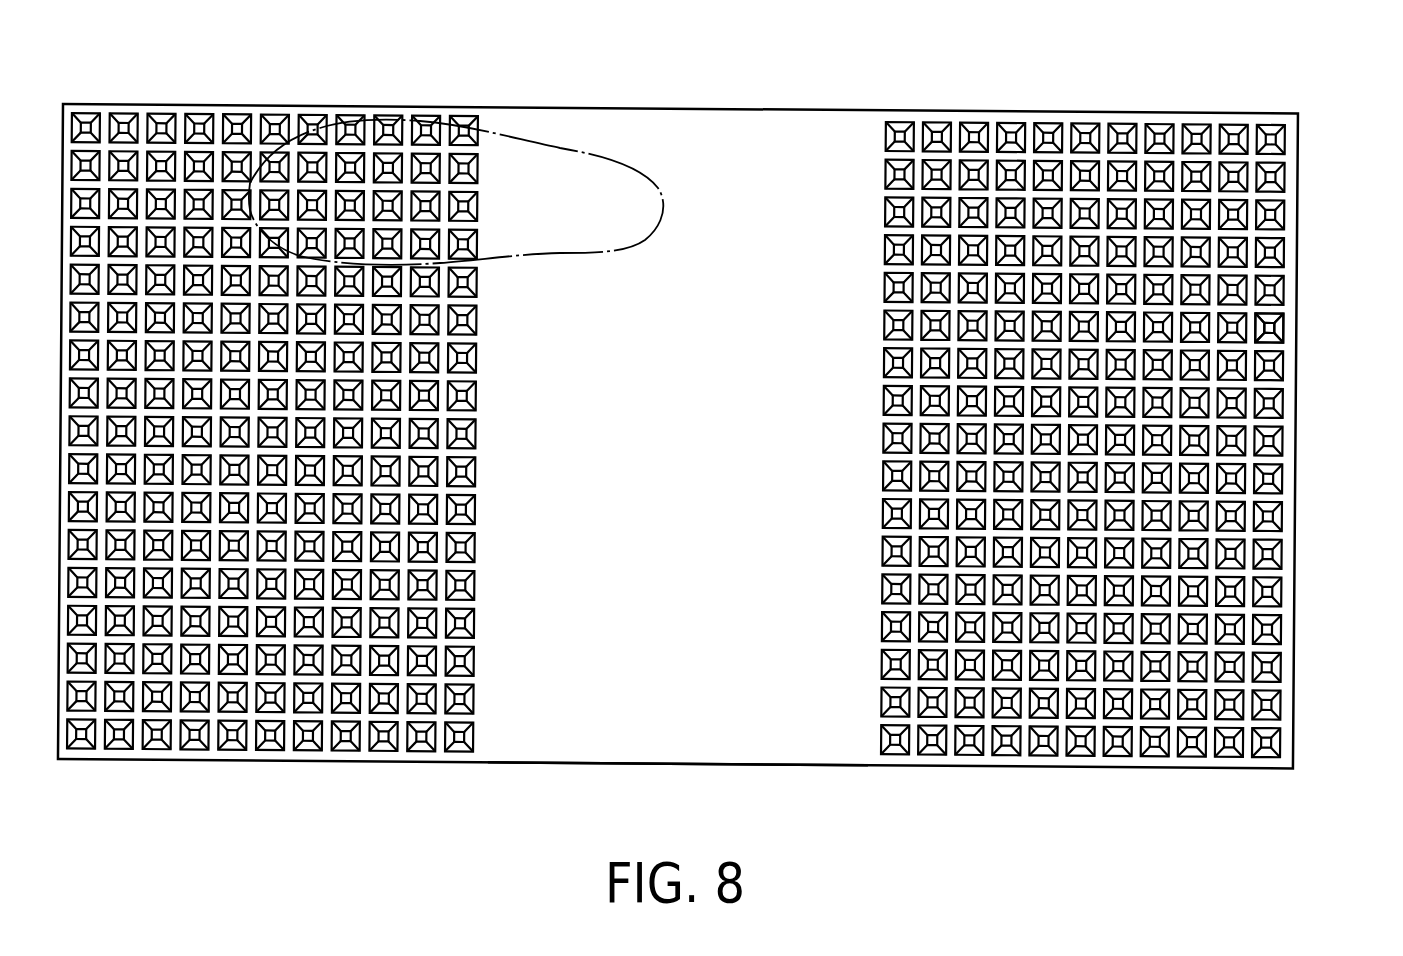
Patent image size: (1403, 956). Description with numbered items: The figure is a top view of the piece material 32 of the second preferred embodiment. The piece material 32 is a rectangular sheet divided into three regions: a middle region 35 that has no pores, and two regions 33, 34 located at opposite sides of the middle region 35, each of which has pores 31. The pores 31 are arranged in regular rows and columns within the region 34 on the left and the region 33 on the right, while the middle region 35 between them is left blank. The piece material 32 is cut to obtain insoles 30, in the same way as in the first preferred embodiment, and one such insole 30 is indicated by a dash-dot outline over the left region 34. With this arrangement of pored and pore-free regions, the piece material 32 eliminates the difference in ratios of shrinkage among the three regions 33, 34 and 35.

The insole 30 is at (553, 128).
The pore 31 is at (1273, 332).
The piece material 32 is at (822, 103).
The region 33 is at (1140, 760).
The region 34 is at (257, 747).
The middle region 35 is at (680, 733).